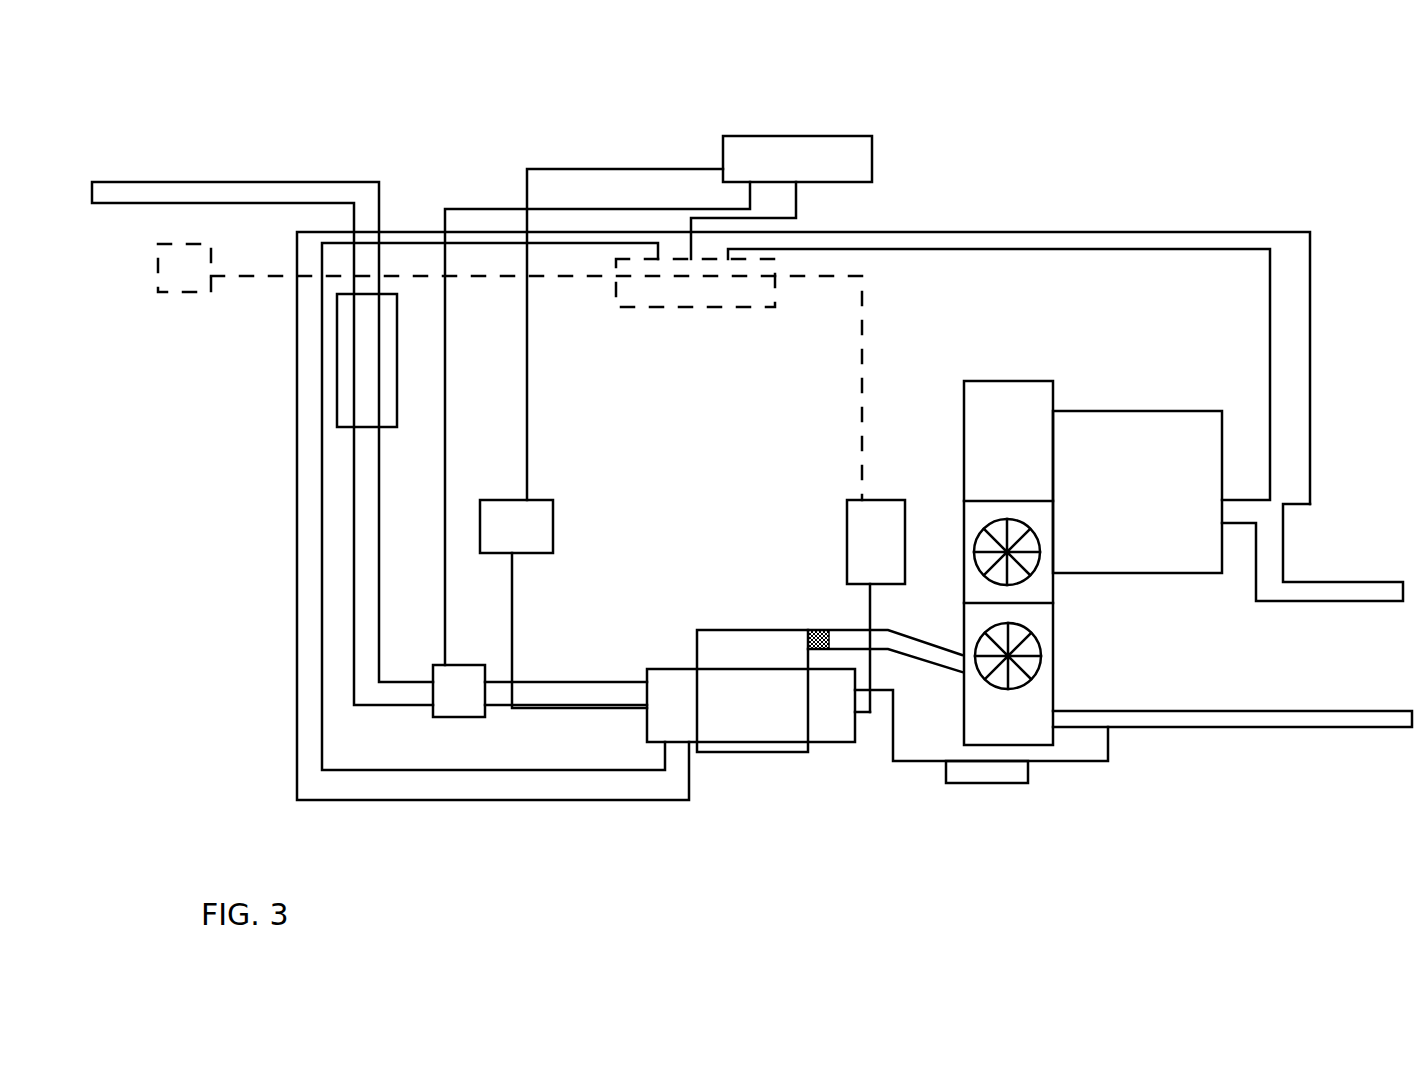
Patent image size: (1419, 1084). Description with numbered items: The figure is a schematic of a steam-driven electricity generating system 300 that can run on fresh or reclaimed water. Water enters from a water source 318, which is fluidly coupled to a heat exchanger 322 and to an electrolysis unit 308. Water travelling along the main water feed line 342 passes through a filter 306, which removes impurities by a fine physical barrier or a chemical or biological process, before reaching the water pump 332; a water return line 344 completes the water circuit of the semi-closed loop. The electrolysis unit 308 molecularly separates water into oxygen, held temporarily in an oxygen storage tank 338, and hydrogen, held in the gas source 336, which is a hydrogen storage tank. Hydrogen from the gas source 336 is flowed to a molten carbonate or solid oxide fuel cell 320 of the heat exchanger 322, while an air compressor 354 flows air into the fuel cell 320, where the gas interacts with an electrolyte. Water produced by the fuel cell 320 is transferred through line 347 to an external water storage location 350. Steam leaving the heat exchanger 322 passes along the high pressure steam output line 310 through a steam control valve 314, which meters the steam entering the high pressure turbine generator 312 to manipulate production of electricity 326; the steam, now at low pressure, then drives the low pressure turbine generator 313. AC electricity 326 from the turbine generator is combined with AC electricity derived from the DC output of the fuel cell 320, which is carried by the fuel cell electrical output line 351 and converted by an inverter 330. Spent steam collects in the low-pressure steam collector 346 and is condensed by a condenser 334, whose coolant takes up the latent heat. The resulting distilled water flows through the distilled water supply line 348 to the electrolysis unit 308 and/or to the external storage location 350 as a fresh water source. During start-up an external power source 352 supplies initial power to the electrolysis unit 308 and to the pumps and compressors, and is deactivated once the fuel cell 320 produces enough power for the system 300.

The steam-driven electricity generating system 300 is at (617, 118).
The filter 306 is at (397, 318).
The electrolysis unit 308 is at (699, 307).
The high pressure steam output line 310 is at (907, 632).
The high pressure turbine generator 312 is at (1037, 672).
The low pressure turbine generator 313 is at (1035, 567).
The steam control valve 314 is at (808, 630).
The water source 318 is at (117, 182).
The fuel cell 320 is at (827, 742).
The heat exchanger 322 is at (753, 752).
The electricity 326 is at (1150, 727).
The inverter 330 is at (987, 783).
The water pump 332 is at (458, 717).
The condenser 334 is at (1076, 411).
The gas source 336 is at (857, 500).
The oxygen storage tank 338 is at (195, 292).
The main water feed line 342 is at (353, 465).
The water return line 344 is at (570, 770).
The low-pressure steam collector 346 is at (1035, 381).
The line 347 is at (297, 613).
The distilled water supply line 348 is at (1028, 249).
The external water storage location 350 is at (1303, 582).
The fuel cell electrical output line 351 is at (893, 761).
The external power source 352 is at (872, 136).
The air compressor 354 is at (540, 500).